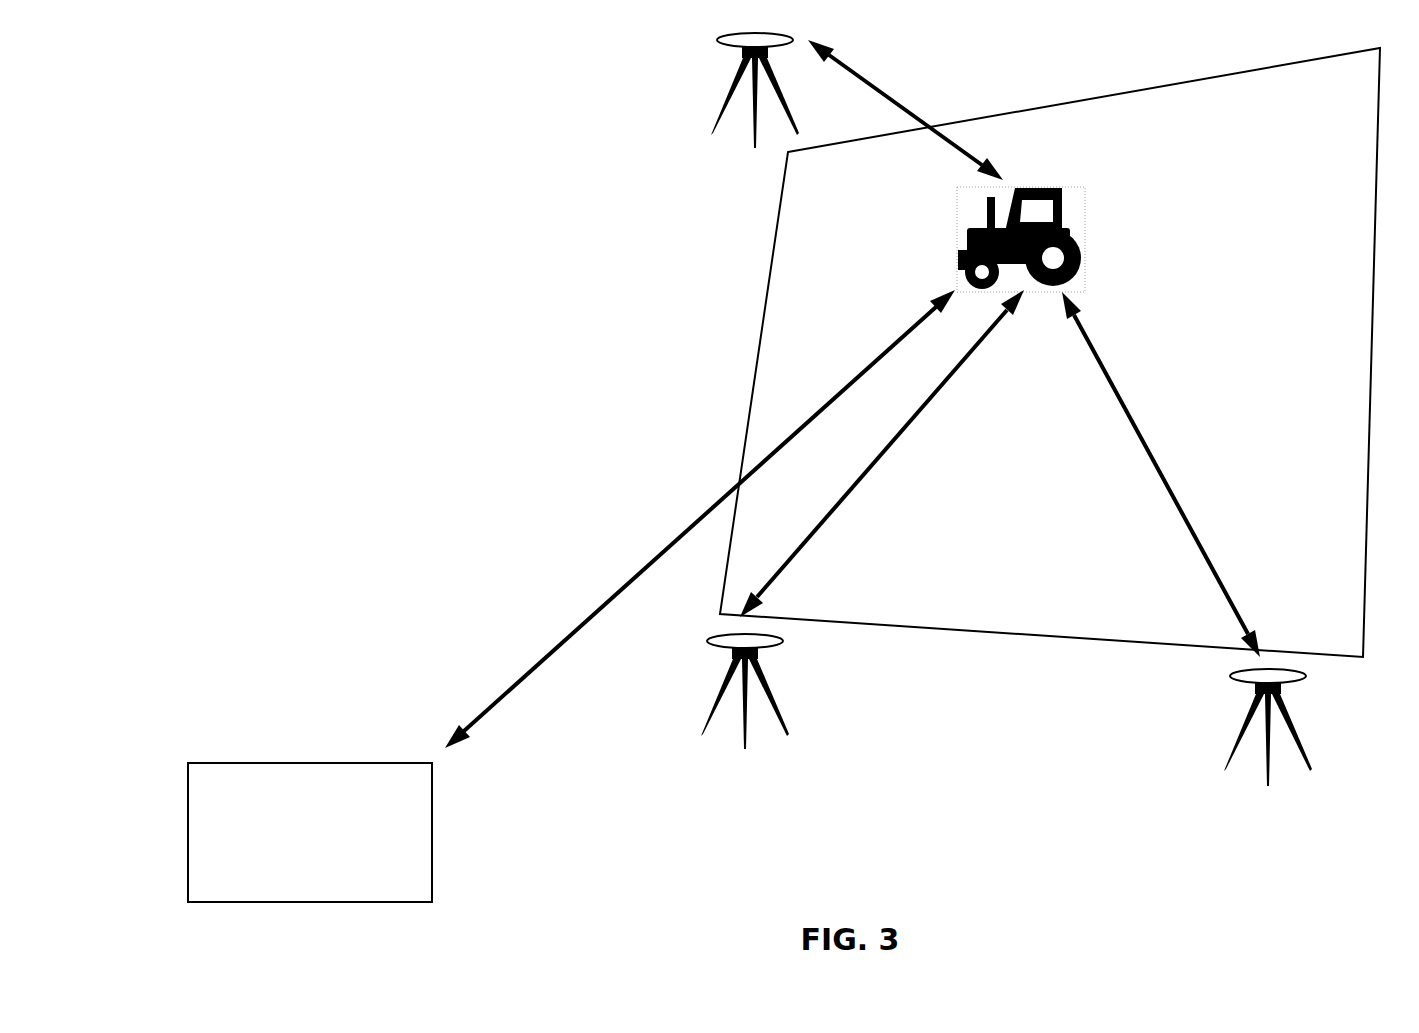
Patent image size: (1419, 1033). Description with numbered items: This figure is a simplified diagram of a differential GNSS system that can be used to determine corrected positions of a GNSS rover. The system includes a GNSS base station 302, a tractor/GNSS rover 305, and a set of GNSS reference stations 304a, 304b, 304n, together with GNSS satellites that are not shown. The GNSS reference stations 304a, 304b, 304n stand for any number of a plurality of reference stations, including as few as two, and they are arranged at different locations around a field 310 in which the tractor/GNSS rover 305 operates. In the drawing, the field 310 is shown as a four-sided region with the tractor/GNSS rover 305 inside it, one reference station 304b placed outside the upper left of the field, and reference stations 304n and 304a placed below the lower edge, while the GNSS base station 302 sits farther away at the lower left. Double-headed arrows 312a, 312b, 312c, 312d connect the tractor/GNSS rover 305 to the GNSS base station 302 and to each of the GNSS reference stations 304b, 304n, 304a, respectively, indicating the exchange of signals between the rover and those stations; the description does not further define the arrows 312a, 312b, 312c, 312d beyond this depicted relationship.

The GNSS base station 302 is at (254, 763).
The GNSS reference station 304a is at (1240, 731).
The GNSS reference station 304b is at (752, 146).
The GNSS reference station 304n is at (776, 700).
The tractor/GNSS rover 305 is at (1085, 275).
The field 310 is at (760, 337).
The communication link 312a is at (646, 562).
The communication link 312b is at (888, 90).
The communication link 312c is at (894, 455).
The communication link 312d is at (1158, 462).